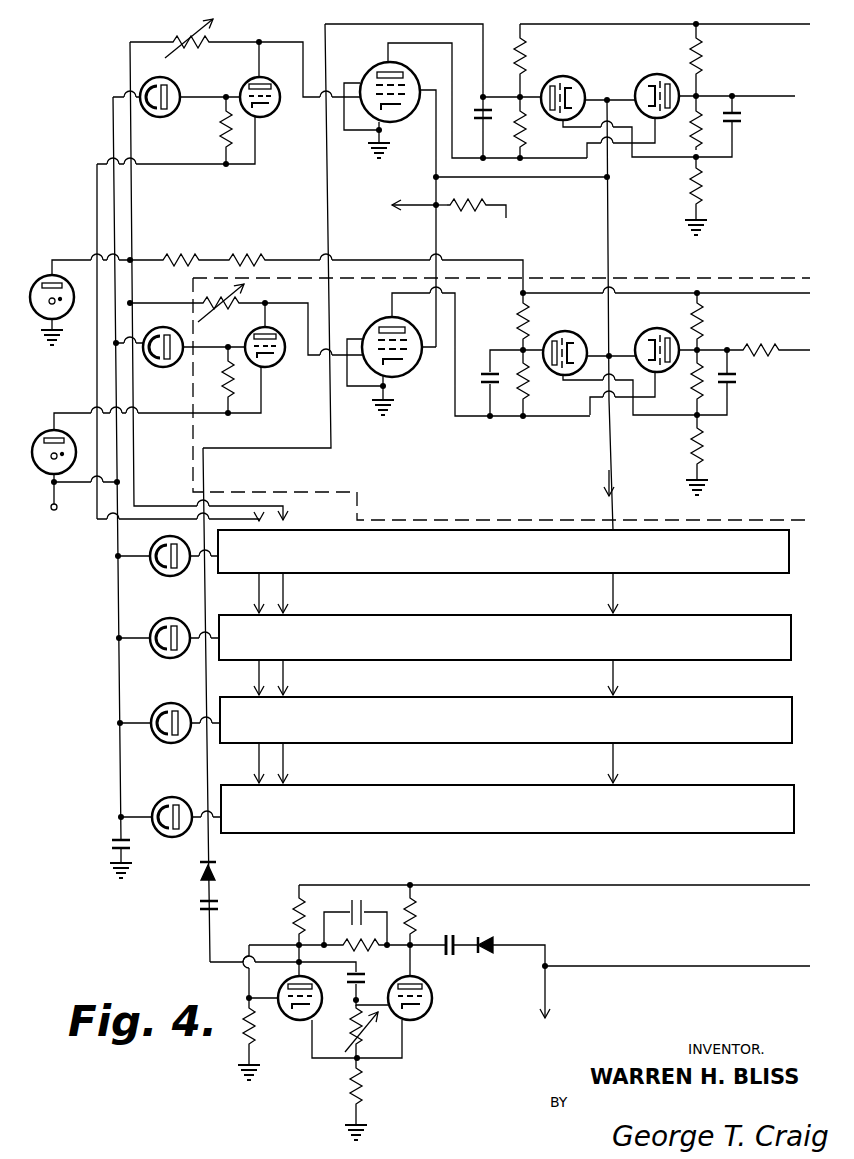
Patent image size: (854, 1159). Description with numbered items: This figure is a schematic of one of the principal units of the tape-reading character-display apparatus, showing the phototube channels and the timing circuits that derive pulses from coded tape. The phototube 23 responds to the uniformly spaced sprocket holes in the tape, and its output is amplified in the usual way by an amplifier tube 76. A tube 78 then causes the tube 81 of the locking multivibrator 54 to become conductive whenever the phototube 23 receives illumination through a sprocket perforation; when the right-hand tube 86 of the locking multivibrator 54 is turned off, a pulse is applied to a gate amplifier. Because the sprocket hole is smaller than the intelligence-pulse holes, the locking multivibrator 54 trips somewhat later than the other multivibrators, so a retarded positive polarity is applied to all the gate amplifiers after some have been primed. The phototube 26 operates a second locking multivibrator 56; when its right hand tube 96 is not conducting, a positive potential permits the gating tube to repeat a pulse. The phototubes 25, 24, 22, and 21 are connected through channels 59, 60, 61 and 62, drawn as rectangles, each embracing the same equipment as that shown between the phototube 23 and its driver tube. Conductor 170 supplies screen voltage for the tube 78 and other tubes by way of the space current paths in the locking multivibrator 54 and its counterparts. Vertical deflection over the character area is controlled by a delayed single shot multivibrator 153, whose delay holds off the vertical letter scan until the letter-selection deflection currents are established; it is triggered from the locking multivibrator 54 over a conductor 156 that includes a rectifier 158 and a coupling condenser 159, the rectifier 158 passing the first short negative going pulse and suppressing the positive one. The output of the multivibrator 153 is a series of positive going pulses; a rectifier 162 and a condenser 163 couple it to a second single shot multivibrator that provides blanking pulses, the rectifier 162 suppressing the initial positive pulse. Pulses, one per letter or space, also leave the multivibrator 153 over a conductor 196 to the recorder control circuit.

The phototube 23 is at (160, 118).
The amplifier tube 76 is at (268, 116).
The tube 78 is at (368, 52).
The tube 81 is at (580, 66).
The locking multivibrator 54 is at (598, 80).
The right-hand tube 86 is at (680, 66).
The conductor 170 is at (420, 195).
The phototube 26 is at (163, 368).
The locking multivibrator 56 is at (596, 332).
The right hand tube 96 is at (643, 330).
The phototube 25 is at (178, 577).
The phototube 24 is at (178, 659).
The phototube 22 is at (179, 744).
The phototube 21 is at (165, 838).
The channel 59 is at (420, 578).
The channel 60 is at (476, 658).
The channel 61 is at (494, 742).
The channel 62 is at (498, 837).
The conductor 156 is at (216, 866).
The rectifier 158 is at (202, 882).
The coupling condenser 159 is at (200, 908).
The delayed single shot multivibrator 153 is at (298, 1048).
The condenser 163 is at (448, 932).
The rectifier 162 is at (488, 932).
The conductor 196 is at (542, 994).